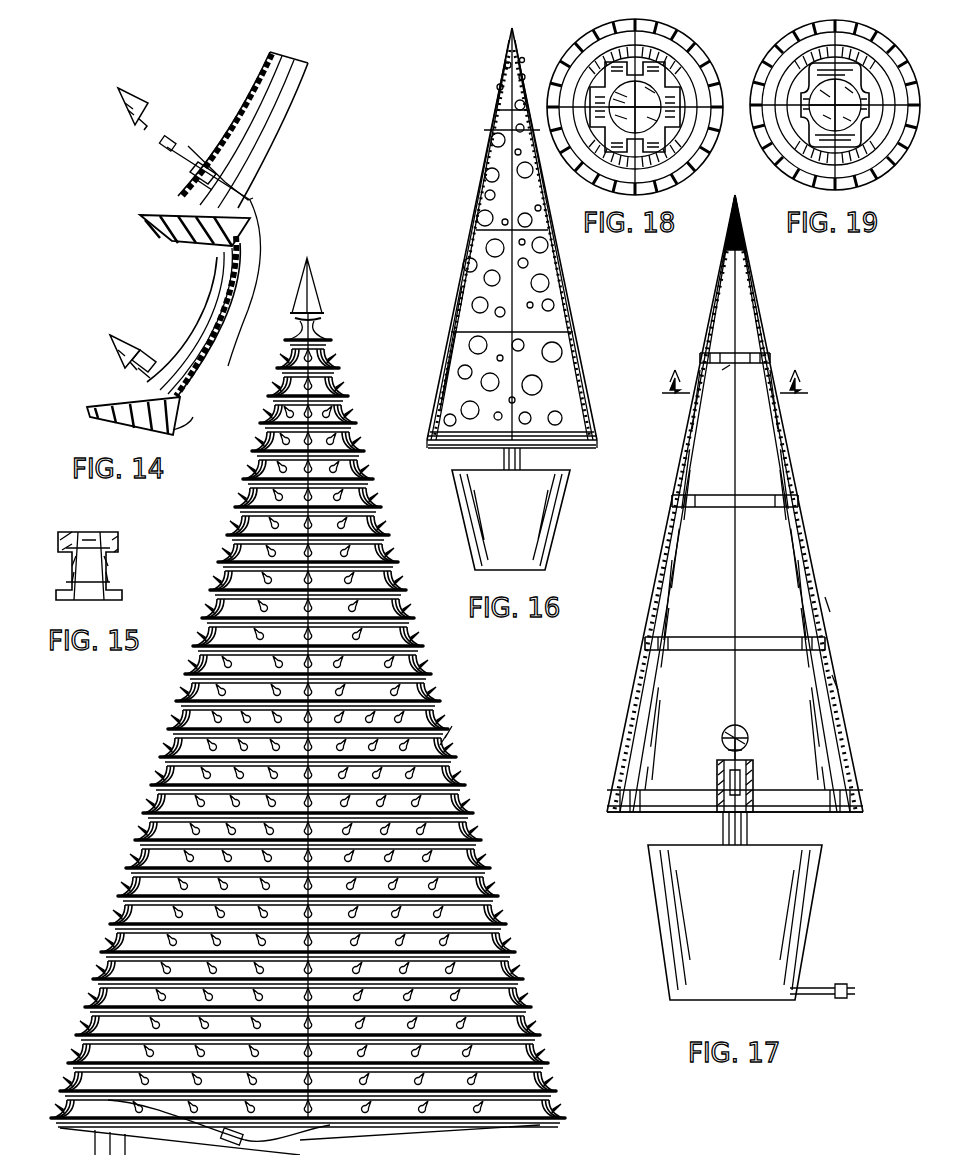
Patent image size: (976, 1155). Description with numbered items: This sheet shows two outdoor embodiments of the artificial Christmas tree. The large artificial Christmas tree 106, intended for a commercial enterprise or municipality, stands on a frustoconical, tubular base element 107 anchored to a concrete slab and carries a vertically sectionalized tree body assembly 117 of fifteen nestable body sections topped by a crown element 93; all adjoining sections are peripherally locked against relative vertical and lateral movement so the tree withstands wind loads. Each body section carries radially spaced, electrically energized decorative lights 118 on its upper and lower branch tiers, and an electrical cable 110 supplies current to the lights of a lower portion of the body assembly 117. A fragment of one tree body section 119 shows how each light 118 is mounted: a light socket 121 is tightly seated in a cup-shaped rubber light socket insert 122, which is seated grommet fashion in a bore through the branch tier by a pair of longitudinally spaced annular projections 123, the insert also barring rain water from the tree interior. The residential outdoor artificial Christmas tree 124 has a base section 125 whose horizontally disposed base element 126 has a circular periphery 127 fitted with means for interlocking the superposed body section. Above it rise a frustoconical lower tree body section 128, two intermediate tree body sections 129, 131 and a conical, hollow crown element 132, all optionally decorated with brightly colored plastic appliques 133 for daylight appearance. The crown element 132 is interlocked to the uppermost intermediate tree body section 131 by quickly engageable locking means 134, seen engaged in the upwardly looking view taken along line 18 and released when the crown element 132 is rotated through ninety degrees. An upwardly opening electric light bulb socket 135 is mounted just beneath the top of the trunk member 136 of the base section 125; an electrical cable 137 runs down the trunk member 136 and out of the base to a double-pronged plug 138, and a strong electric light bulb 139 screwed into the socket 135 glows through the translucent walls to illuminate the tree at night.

In FIG. 17, the section line 18- 18 is at (737, 387).
In FIG. 13, the crown element 93 is at (312, 276).
In FIG. 13, the artificial Christmas tree 106 is at (446, 733).
In FIG. 13, the base element 107 is at (560, 1138).
In FIG. 13, the electrical cable 110 is at (98, 1130).
In FIG. 13, the tree body assembly 117 is at (142, 834).
In FIG. 13, the decorative lights 118 is at (180, 722).
In FIG. 14, the decorative lights 118 is at (125, 115).
In FIG. 14, the tree body section 119 is at (258, 168).
In FIG. 14, the light socket 121 is at (164, 150).
In FIG. 14, the light socket insert 122 is at (203, 165).
In FIG. 15, the light socket insert 122 is at (105, 592).
In FIG. 15, the annular projections 123 is at (112, 552).
In FIG. 16, the artificial Christmas tree 124 is at (482, 175).
In FIG. 17, the artificial Christmas tree 124 is at (818, 532).
In FIG. 16, the base section 125 is at (558, 546).
In FIG. 17, the base section 125 is at (818, 905).
In FIG. 16, the base element 126 is at (470, 448).
In FIG. 17, the base element 126 is at (820, 814).
In FIG. 16, the circular periphery 127 is at (428, 442).
In FIG. 17, the circular periphery 127 is at (860, 800).
In FIG. 16, the lower tree body section 128 is at (450, 372).
In FIG. 17, the lower tree body section 128 is at (836, 674).
In FIG. 16, the intermediate tree body section 129 is at (462, 298).
In FIG. 17, the intermediate tree body section 129 is at (822, 598).
In FIG. 16, the intermediate tree body section 131 is at (476, 218).
In FIG. 17, the intermediate tree body section 131 is at (772, 366).
In FIG. 18, the intermediate tree body section 131 is at (672, 172).
In FIG. 19, the intermediate tree body section 131 is at (792, 175).
In FIG. 16, the crown element 132 is at (494, 112).
In FIG. 17, the crown element 132 is at (757, 302).
In FIG. 18, the crown element 132 is at (562, 68).
In FIG. 19, the crown element 132 is at (858, 165).
In FIG. 16, the plastic appliques 133 is at (528, 310).
In FIG. 17, the locking means 134 is at (718, 366).
In FIG. 18, the locking means 134 is at (612, 73).
In FIG. 19, the locking means 134 is at (866, 86).
In FIG. 17, the electric light bulb socket 135 is at (752, 775).
In FIG. 17, the trunk member 136 is at (722, 835).
In FIG. 17, the electrical cable 137 is at (745, 830).
In FIG. 17, the double-pronged plug 138 is at (845, 1000).
In FIG. 17, the electric light bulb 139 is at (722, 733).